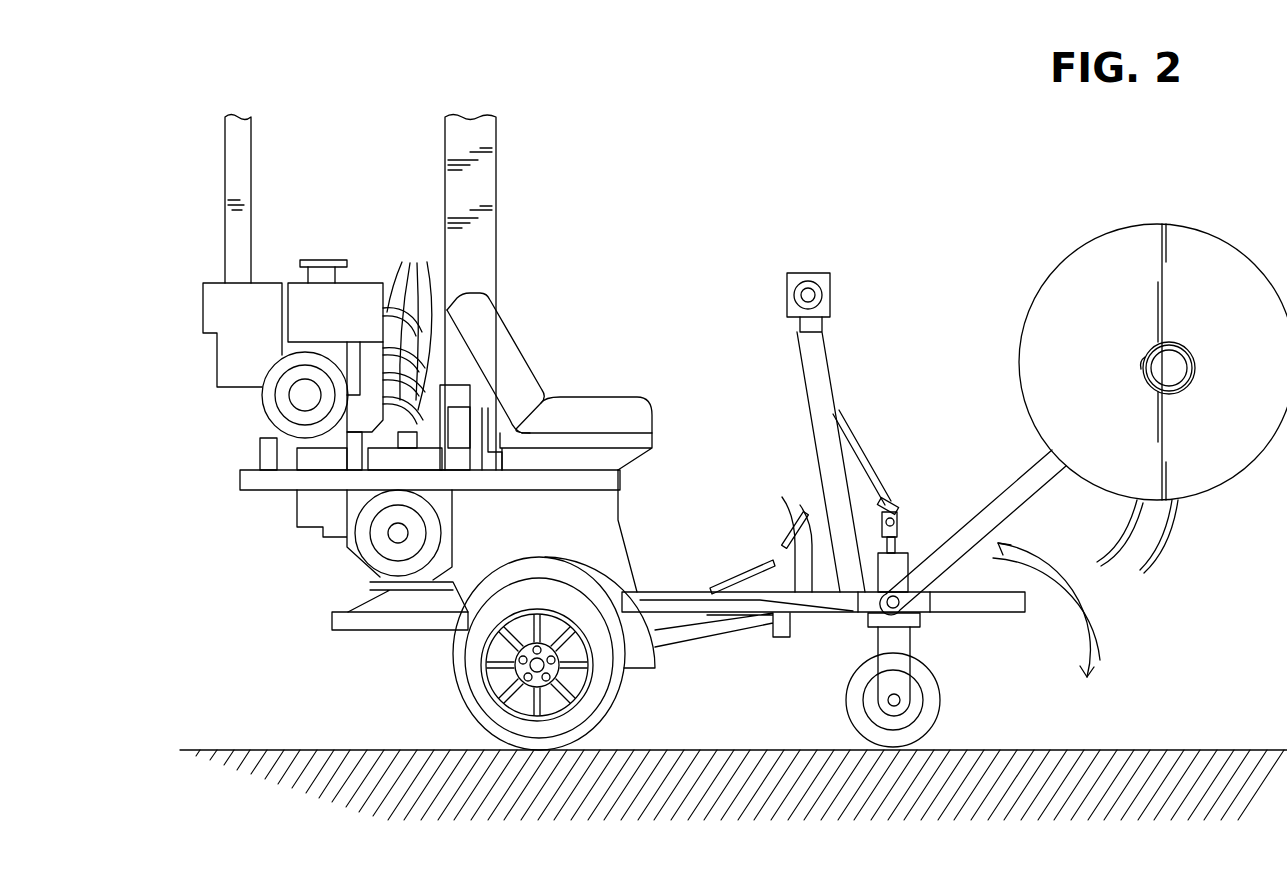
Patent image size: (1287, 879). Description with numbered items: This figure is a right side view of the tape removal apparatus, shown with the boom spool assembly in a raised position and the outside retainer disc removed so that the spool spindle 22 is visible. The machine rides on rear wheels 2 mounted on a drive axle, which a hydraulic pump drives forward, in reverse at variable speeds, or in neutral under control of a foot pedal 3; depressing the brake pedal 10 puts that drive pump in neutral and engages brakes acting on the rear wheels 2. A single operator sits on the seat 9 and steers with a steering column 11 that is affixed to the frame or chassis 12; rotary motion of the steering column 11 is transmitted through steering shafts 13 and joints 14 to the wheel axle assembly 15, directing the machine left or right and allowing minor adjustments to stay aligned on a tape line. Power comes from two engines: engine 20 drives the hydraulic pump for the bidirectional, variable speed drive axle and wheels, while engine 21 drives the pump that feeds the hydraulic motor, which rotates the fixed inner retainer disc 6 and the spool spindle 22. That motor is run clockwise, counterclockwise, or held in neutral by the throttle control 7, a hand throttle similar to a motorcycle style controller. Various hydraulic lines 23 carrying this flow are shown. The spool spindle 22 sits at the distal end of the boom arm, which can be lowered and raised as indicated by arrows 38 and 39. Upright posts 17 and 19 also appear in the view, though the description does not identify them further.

The rear wheels 2 is at (467, 718).
The foot pedal 3 is at (735, 572).
The fixed inner retainer disc 6 is at (1207, 257).
The throttle control 7 is at (808, 288).
The seat 9 is at (588, 410).
The brake pedal 10 is at (783, 508).
The steering column 11 is at (808, 365).
The frame or chassis 12 is at (845, 603).
The steering shafts 13 is at (846, 440).
The joints 14 is at (900, 508).
The wheel axle assembly 15 is at (850, 715).
The rear post 17 is at (481, 133).
The exhaust post 19 is at (241, 160).
The engine 20 is at (378, 545).
The engine 21 is at (270, 395).
The spool spindle 22 is at (1170, 345).
The hydraulic lines 23 is at (1195, 562).
The arrow 38 is at (1085, 612).
The arrow 39 is at (1075, 638).